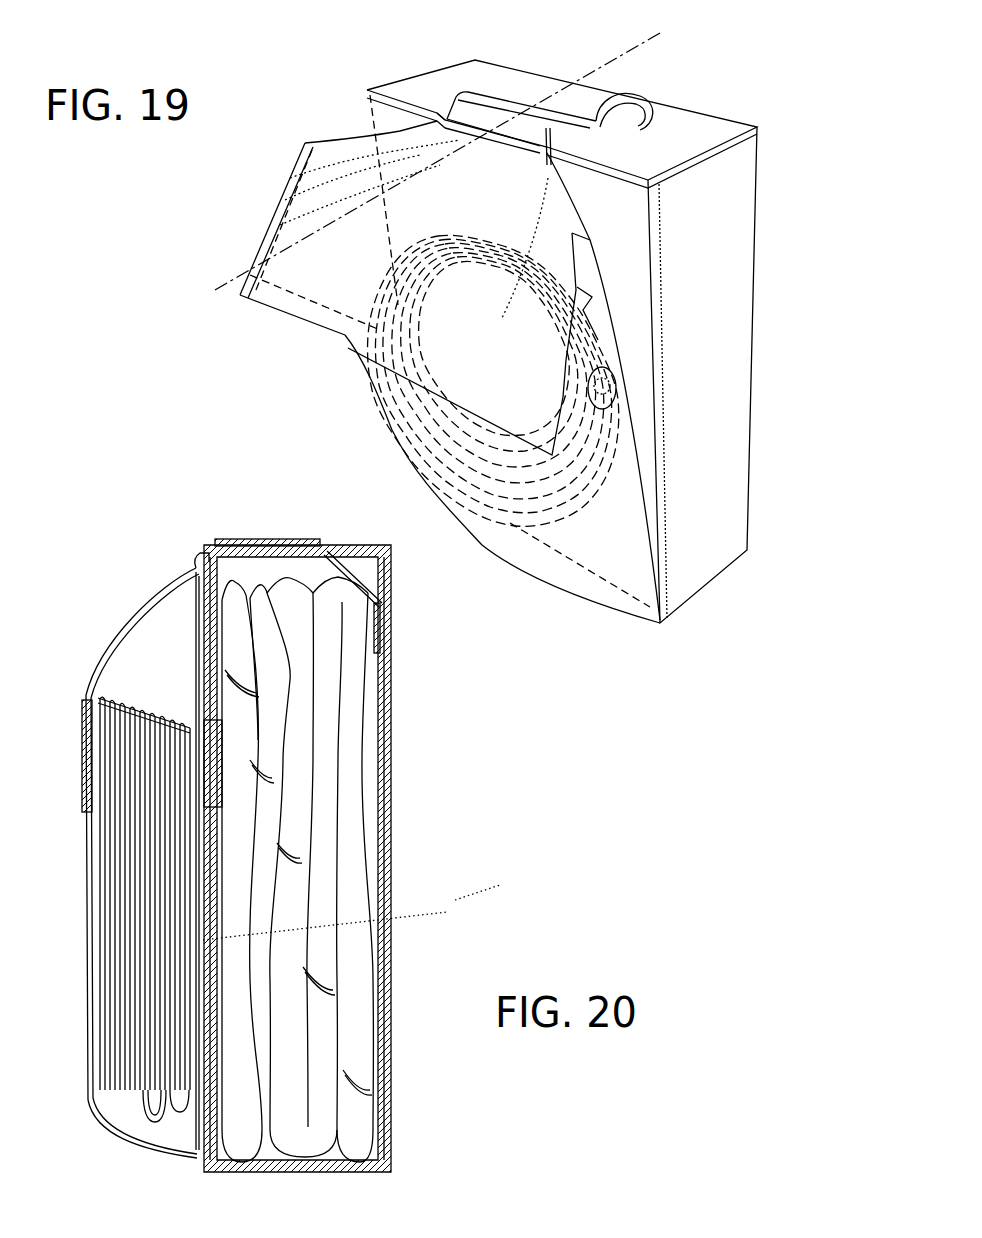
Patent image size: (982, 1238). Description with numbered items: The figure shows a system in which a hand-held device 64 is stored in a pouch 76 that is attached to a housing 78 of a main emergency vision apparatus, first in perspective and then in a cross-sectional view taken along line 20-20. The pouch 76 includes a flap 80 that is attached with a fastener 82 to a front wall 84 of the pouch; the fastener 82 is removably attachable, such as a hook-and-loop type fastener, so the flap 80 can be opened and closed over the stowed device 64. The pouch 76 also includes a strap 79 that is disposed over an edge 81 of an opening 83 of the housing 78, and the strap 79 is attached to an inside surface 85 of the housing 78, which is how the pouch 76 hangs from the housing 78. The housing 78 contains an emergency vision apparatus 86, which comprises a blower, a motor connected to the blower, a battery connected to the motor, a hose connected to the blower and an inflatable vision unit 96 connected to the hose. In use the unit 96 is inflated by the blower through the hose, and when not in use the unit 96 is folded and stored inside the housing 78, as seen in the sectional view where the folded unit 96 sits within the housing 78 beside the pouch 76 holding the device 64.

In FIG. 19, the line 20- 20 is at (578, 30).
In FIG. 19, the pouch 76 is at (578, 592).
In FIG. 19, the housing 78 is at (720, 493).
In FIG. 19, the strap 79 is at (560, 150).
In FIG. 20, the strap 79 is at (196, 556).
In FIG. 19, the flap 80 is at (270, 215).
In FIG. 20, the flap 80 is at (132, 630).
In FIG. 20, the edge 81 is at (207, 550).
In FIG. 20, the fastener 82 is at (82, 757).
In FIG. 20, the opening 83 is at (362, 565).
In FIG. 20, the front wall 84 is at (93, 968).
In FIG. 20, the inside surface 85 is at (351, 912).
In FIG. 20, the emergency vision apparatus 86 is at (352, 858).
In FIG. 20, the inflatable vision unit 96 is at (347, 770).
In FIG. 20, the device 64 is at (122, 857).